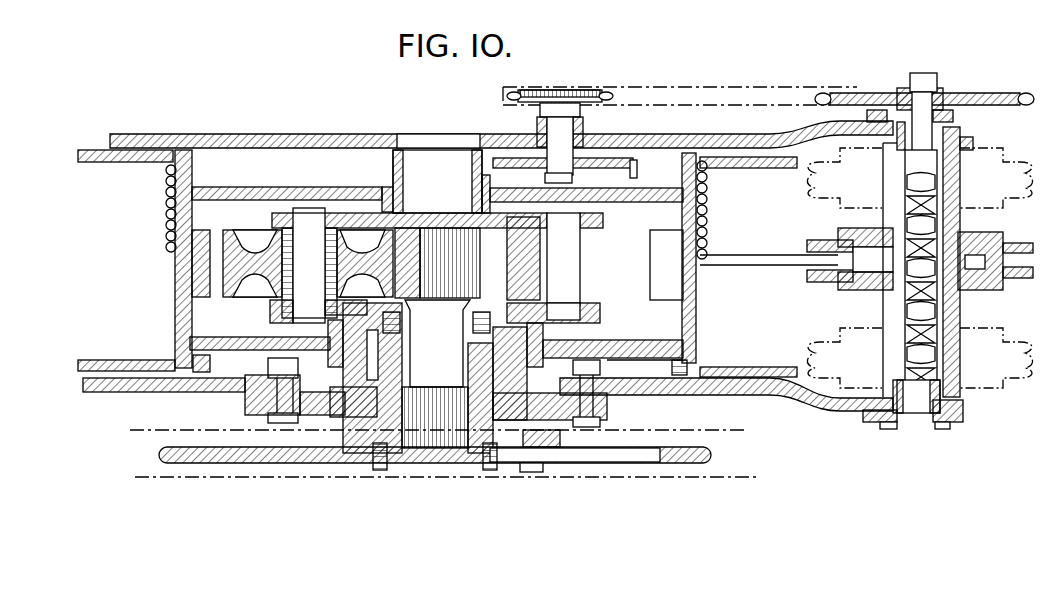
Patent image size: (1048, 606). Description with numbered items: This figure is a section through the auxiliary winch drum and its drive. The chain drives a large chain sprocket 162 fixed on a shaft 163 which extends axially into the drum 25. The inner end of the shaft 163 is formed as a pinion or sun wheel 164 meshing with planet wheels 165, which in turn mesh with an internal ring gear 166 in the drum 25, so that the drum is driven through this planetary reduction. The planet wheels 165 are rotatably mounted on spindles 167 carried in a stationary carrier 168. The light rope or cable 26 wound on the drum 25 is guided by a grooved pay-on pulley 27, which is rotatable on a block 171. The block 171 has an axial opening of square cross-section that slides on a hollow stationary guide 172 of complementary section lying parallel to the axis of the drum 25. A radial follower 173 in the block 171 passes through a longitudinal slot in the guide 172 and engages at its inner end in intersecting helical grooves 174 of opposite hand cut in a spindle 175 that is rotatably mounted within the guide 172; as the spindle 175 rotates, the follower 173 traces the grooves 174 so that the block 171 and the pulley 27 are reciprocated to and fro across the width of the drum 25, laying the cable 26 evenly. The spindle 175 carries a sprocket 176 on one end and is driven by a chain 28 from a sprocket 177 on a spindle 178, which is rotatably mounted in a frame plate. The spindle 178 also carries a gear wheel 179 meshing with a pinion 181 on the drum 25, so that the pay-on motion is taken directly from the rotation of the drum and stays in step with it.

The drum 25 is at (195, 175).
The light rope or cable 26 is at (708, 204).
The grooved pay-on pulley 27 is at (1007, 278).
The chain 28 is at (740, 96).
The large chain sprocket 162 is at (682, 447).
The shaft 163 is at (441, 400).
The pinion or sun wheel 164 is at (462, 283).
The planet wheels 165 is at (228, 276).
The internal ring gear 166 is at (190, 266).
The spindles 167 is at (300, 305).
The stationary carrier 168 is at (612, 294).
The block 171 is at (855, 290).
The hollow stationary guide 172 is at (952, 392).
The radial follower 173 is at (862, 253).
The intersecting helical grooves 174 is at (958, 213).
The spindle 175 is at (935, 162).
The sprocket 176 is at (866, 92).
The sprocket 177 is at (573, 88).
The spindle 178 is at (562, 132).
The gear wheel 179 is at (634, 175).
The pinion 181 is at (393, 177).